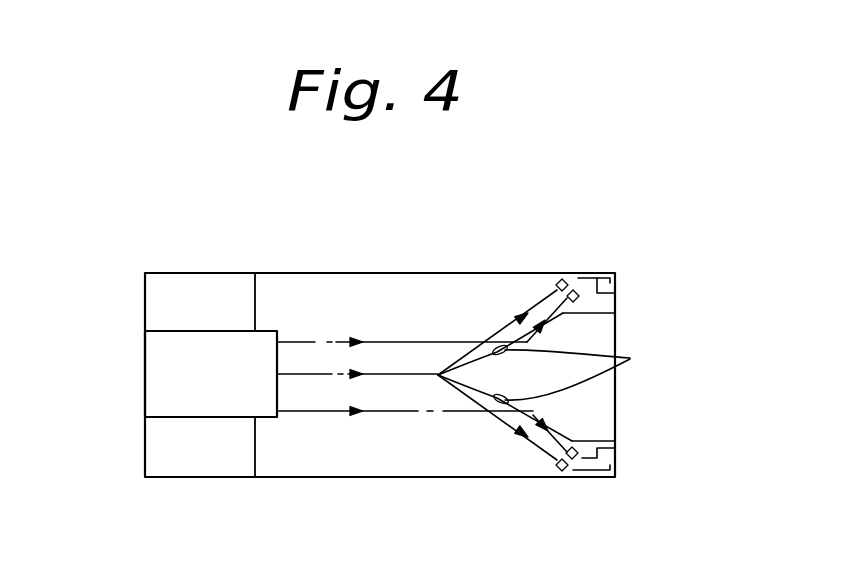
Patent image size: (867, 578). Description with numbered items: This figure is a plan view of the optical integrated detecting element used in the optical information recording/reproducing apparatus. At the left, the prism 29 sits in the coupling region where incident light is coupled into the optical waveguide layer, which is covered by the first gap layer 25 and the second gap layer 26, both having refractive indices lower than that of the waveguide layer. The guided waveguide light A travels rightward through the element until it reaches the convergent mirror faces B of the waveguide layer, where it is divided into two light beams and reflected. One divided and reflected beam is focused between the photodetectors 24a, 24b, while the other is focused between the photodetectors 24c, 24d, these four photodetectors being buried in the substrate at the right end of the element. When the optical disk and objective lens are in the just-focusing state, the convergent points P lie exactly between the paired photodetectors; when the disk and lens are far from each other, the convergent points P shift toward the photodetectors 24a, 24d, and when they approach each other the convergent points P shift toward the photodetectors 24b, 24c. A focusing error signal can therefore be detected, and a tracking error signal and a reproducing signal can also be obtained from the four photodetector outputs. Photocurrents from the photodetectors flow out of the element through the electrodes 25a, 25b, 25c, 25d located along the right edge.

The photodetector 24a is at (560, 471).
The photodetector 24b is at (577, 459).
The photodetector 24c is at (578, 290).
The photodetector 24d is at (561, 279).
The first gap layer 25 is at (228, 288).
The electrode 25a is at (600, 447).
The electrode 25b is at (597, 440).
The electrode 25c is at (614, 290).
The electrode 25d is at (592, 276).
The second gap layer 26 is at (426, 288).
The prism 29 is at (178, 342).
The waveguide light A is at (382, 340).
The convergent mirror faces B is at (622, 359).
The convergent points P is at (555, 292).